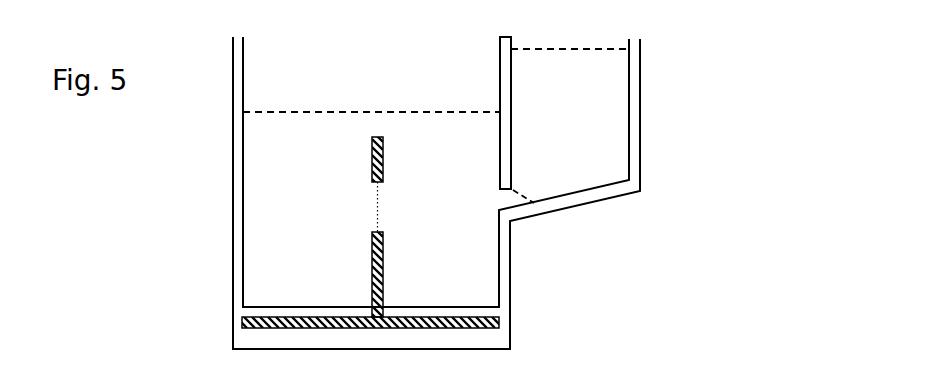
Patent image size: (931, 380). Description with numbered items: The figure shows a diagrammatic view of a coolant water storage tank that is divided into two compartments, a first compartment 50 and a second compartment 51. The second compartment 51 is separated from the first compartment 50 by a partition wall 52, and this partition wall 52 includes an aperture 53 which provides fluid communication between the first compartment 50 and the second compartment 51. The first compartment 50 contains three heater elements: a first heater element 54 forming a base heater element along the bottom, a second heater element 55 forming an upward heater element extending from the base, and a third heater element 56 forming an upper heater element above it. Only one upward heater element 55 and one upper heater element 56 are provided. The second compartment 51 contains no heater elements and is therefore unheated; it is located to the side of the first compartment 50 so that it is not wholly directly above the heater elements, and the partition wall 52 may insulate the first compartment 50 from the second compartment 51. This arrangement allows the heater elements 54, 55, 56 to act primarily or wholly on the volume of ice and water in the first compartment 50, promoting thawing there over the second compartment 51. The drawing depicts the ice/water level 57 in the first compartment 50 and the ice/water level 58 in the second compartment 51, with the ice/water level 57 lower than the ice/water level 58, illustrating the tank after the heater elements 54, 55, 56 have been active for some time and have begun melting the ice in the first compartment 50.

The first compartment 50 is at (305, 222).
The second compartment 51 is at (580, 124).
The partition wall 52 is at (503, 78).
The aperture 53 is at (512, 198).
The first heater element 54 is at (243, 321).
The second heater element 55 is at (384, 266).
The third heater element 56 is at (384, 160).
The ice/water level 57 is at (315, 110).
The ice/water level 58 is at (560, 48).